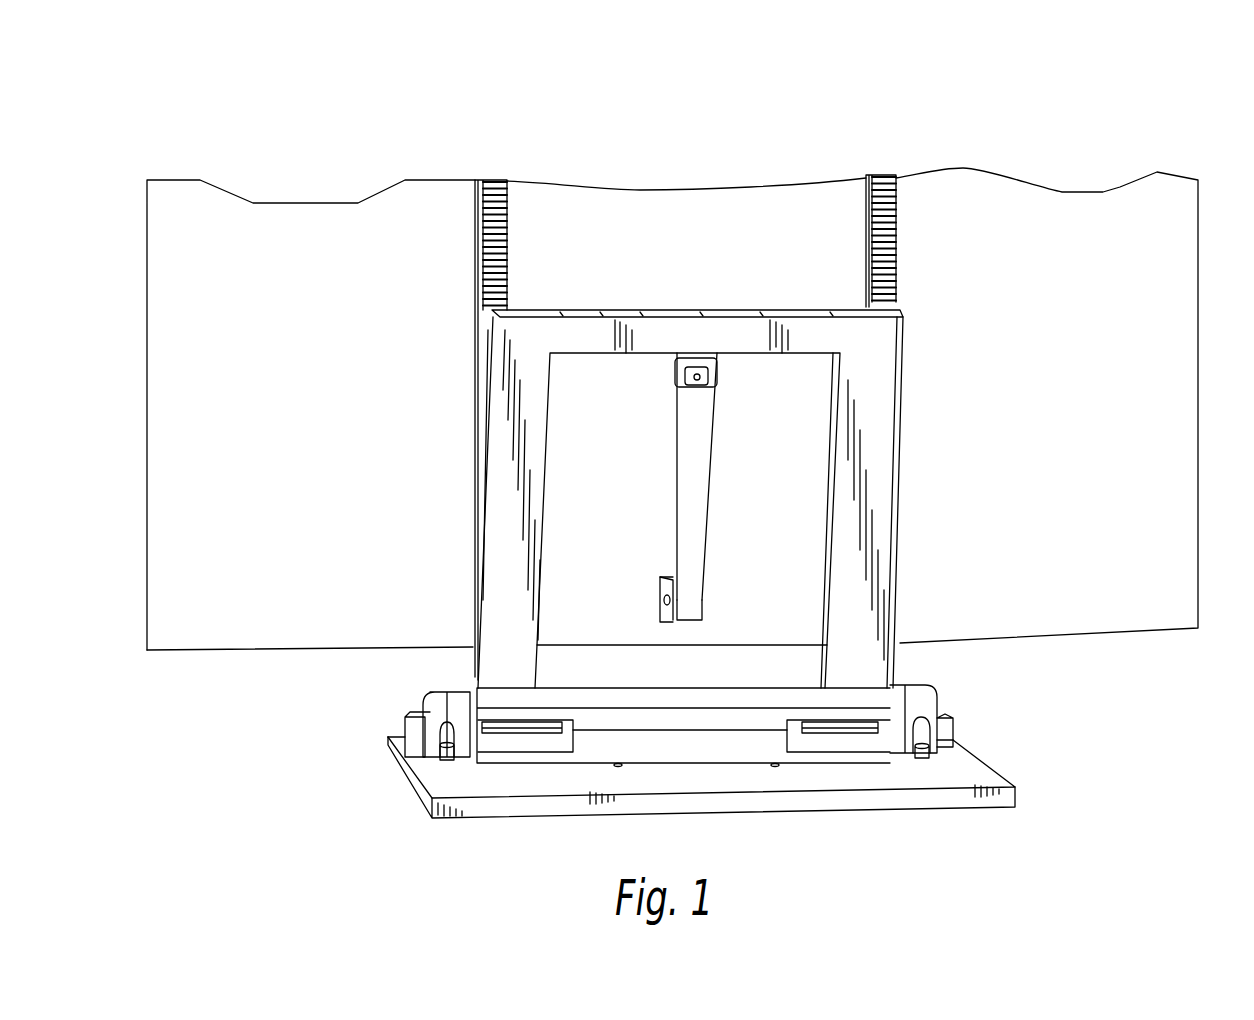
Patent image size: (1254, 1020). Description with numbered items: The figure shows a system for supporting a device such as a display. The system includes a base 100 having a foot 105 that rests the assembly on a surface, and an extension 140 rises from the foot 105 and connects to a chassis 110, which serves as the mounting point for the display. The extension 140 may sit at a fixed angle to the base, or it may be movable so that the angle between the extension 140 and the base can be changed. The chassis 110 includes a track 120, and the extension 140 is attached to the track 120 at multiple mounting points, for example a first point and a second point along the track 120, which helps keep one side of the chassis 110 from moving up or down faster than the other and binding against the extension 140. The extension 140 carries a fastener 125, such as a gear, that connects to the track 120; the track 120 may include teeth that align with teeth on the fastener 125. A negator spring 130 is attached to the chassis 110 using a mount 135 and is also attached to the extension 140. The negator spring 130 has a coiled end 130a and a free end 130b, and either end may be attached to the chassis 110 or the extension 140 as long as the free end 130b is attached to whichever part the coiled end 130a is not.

The base 100 is at (581, 95).
The foot 105 is at (970, 773).
The chassis 110 is at (1102, 235).
The track 120 is at (893, 198).
The fastener 125 is at (899, 311).
The negator spring 130 is at (688, 438).
The coiled end 130a is at (700, 603).
The free end 130b is at (705, 378).
The mount 135 is at (663, 607).
The extension 140 is at (502, 640).